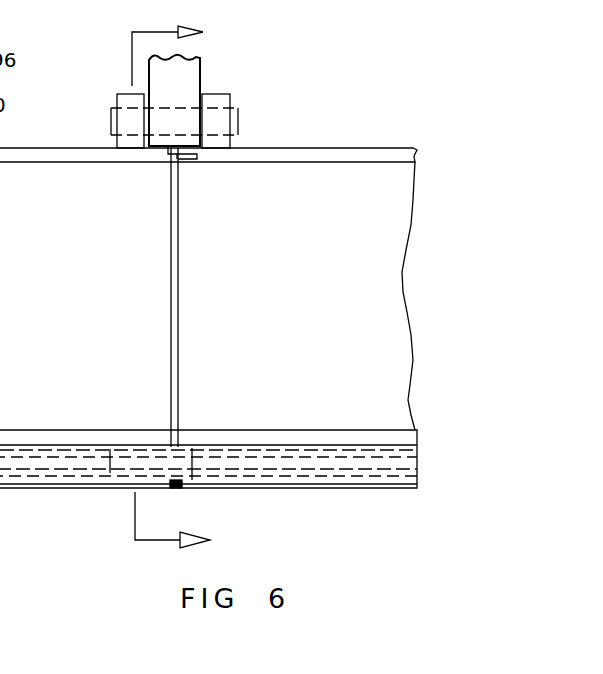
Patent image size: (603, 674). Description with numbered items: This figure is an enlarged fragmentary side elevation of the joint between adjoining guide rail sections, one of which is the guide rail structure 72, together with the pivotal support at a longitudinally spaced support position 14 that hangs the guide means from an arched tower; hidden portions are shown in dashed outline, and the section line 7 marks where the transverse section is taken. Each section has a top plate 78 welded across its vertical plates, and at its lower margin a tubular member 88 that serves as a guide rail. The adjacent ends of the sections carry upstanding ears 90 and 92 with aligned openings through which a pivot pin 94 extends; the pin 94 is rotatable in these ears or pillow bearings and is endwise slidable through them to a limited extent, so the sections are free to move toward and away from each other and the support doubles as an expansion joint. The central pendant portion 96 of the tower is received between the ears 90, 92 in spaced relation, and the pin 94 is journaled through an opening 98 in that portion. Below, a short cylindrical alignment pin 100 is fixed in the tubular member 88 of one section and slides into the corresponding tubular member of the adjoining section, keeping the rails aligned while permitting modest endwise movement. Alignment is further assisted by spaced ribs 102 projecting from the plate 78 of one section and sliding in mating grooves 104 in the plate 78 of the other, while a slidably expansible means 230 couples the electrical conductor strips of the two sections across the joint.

The section line 7- 7 is at (171, 275).
The longitudinally spaced support position 14 is at (212, 48).
The guide rail structure 72 is at (403, 273).
The plate 78 is at (84, 148).
The tubular member 88 is at (424, 474).
The upstanding ear 90 is at (128, 96).
The upstanding ear 92 is at (217, 100).
The pivot pin 94 is at (236, 106).
The central pendant portion 96 is at (202, 75).
The opening 98 is at (172, 136).
The alignment pin 100 is at (203, 481).
The rib 102 is at (180, 158).
The groove 104 is at (193, 157).
The slidably expansible means 230 is at (182, 488).